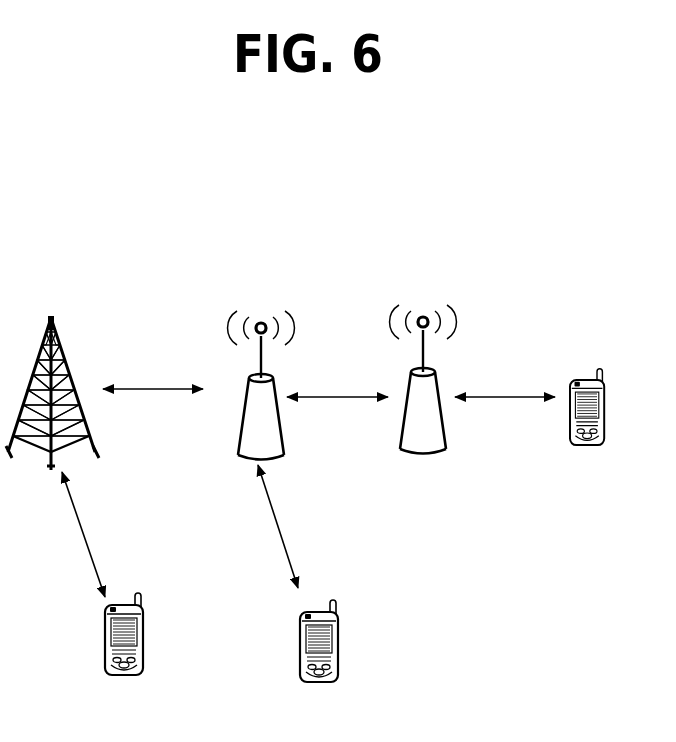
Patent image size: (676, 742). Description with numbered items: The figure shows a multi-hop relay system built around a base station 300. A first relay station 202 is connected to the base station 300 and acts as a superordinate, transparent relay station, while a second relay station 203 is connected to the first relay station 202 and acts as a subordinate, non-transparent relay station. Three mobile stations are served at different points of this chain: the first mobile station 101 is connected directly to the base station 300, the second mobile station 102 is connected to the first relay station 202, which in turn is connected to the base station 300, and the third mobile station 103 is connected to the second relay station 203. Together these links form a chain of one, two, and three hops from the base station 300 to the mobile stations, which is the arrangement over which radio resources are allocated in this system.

The base station 300 is at (53, 312).
The first relay station 202 is at (263, 305).
The second relay station 203 is at (426, 302).
The first mobile station 101 is at (141, 600).
The second mobile station 102 is at (333, 607).
The third mobile station 103 is at (602, 370).